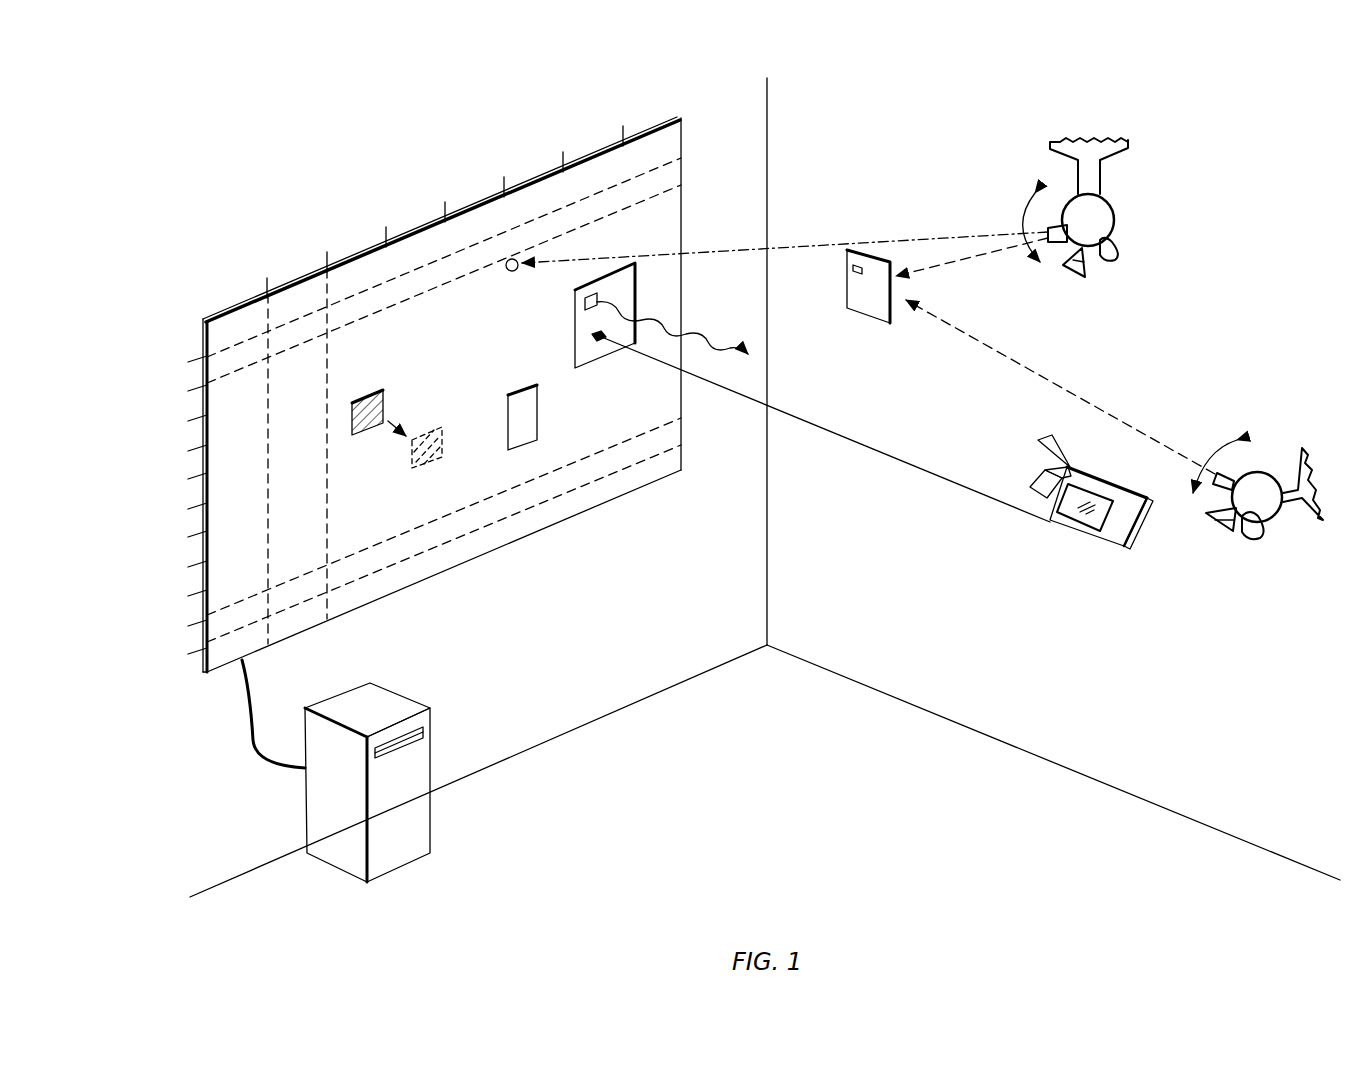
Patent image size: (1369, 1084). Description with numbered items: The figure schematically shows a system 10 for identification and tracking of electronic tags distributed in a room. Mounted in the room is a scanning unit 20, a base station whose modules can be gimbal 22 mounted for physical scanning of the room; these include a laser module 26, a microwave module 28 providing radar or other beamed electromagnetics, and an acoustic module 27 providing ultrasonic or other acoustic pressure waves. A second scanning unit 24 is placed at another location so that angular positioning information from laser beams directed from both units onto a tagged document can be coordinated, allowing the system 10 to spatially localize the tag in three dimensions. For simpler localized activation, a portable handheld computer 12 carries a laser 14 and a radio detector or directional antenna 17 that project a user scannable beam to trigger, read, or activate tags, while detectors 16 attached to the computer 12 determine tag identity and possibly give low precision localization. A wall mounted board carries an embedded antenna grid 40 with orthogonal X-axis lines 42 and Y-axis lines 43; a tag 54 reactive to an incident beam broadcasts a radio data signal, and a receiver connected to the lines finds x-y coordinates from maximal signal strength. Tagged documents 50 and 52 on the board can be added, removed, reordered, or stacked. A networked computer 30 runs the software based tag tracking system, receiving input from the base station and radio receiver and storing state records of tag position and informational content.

The system 10 is at (945, 126).
The portable handheld computer 12 is at (1103, 502).
The laser 14 is at (1087, 543).
The detectors 16 is at (1033, 490).
The radio detector/directional antenna 17 is at (1045, 452).
The scanning unit 20 is at (1078, 360).
The gimbal 22 is at (1103, 216).
The scanning unit 24 is at (1262, 452).
The laser module 26 is at (1055, 243).
The acoustic module 27 is at (1110, 257).
The microwave module 28 is at (1071, 273).
The networked computer 30 is at (441, 811).
The embedded antenna grid 40 is at (478, 172).
The lines (X-axis) 42 is at (193, 392).
The lines (Y-axis) 43 is at (384, 238).
The document 50 is at (586, 357).
The document 52 is at (385, 403).
The tag 54 is at (510, 272).